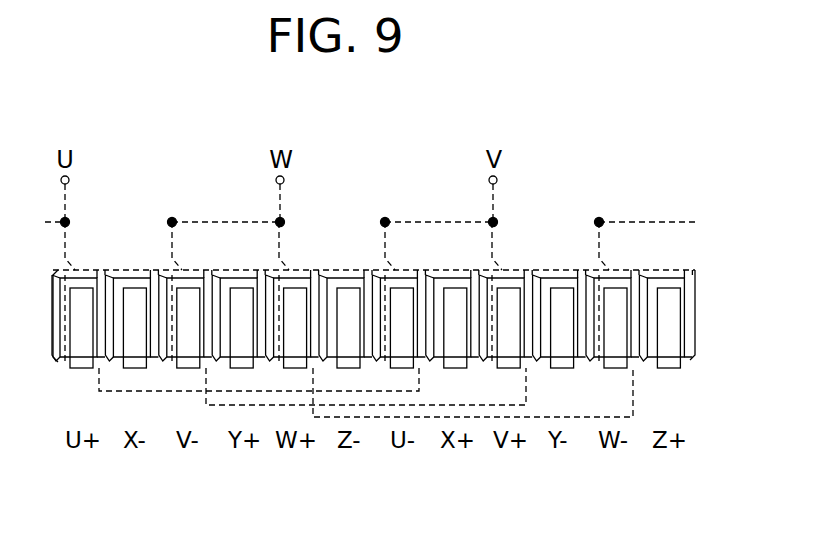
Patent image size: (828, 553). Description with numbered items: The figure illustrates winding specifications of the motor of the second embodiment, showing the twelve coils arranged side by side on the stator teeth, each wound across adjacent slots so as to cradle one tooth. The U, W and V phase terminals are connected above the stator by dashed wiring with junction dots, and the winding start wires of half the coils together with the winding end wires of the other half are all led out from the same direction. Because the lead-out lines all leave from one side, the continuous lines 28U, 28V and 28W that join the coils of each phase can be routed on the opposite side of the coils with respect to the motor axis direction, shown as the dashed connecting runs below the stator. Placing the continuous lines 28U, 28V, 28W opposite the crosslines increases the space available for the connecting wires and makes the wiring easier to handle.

The continuous line 28U is at (188, 393).
The continuous line 28V is at (298, 406).
The continuous line 28W is at (386, 418).